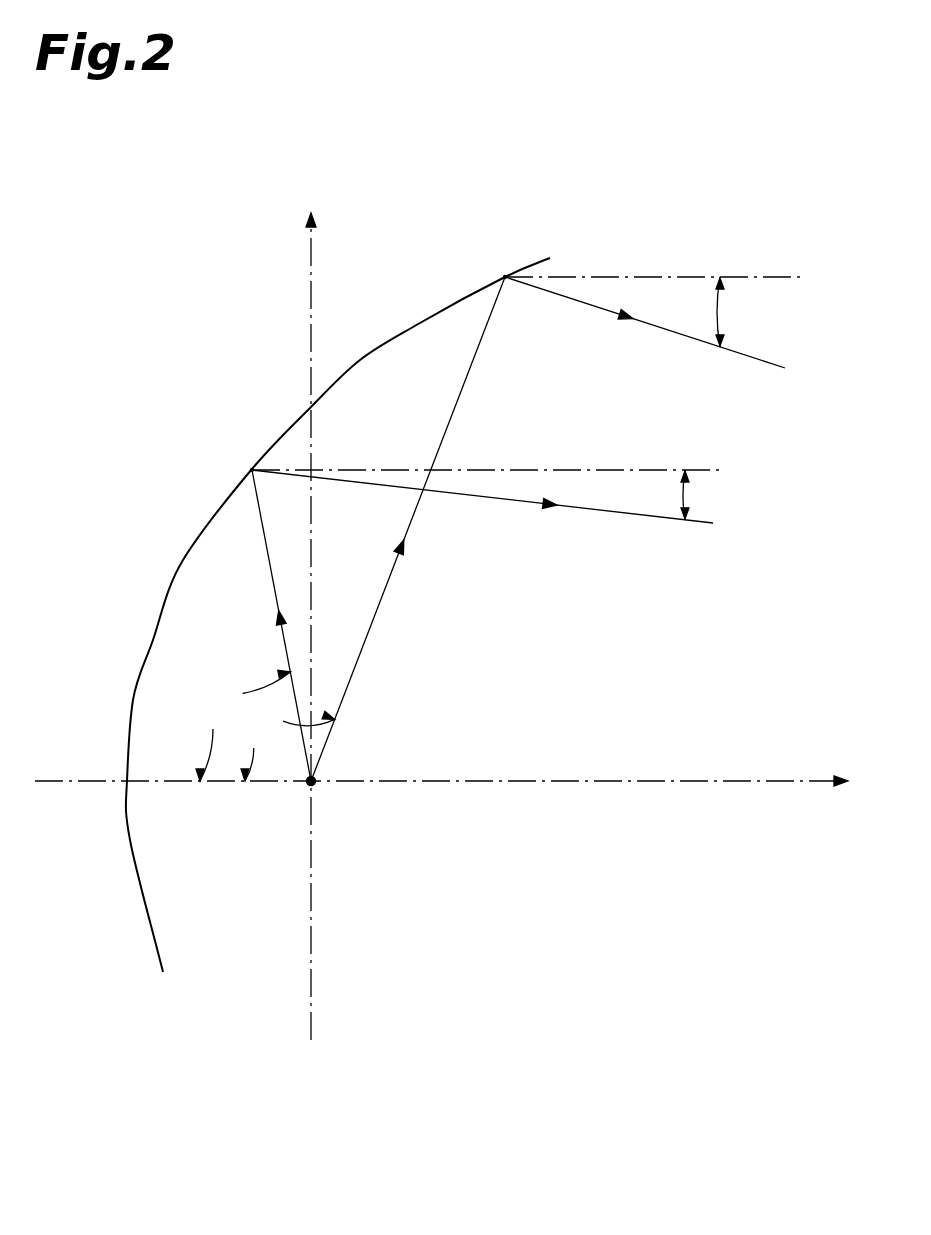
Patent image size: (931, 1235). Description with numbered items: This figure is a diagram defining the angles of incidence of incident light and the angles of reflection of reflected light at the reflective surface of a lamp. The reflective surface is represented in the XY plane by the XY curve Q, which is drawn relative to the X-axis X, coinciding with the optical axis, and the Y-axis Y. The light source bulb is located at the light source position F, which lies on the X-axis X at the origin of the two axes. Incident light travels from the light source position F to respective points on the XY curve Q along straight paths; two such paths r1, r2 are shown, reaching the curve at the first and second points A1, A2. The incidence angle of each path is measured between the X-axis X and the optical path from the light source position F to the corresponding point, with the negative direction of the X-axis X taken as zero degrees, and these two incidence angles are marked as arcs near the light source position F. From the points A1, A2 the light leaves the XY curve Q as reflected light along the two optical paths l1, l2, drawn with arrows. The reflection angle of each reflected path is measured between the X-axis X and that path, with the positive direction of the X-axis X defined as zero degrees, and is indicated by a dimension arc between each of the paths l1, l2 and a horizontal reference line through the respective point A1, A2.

The XY curve Q is at (420, 322).
The light source position F is at (314, 785).
The first point on XY curve A1 is at (230, 454).
The second point on XY curve A2 is at (495, 260).
The distance from F to A1 r1 is at (276, 625).
The distance from F to A2 r2 is at (408, 529).
The first optical path l1 is at (265, 540).
The second optical path l2 is at (583, 300).
The X-axis X is at (441, 805).
The Y-axis Y is at (326, 623).